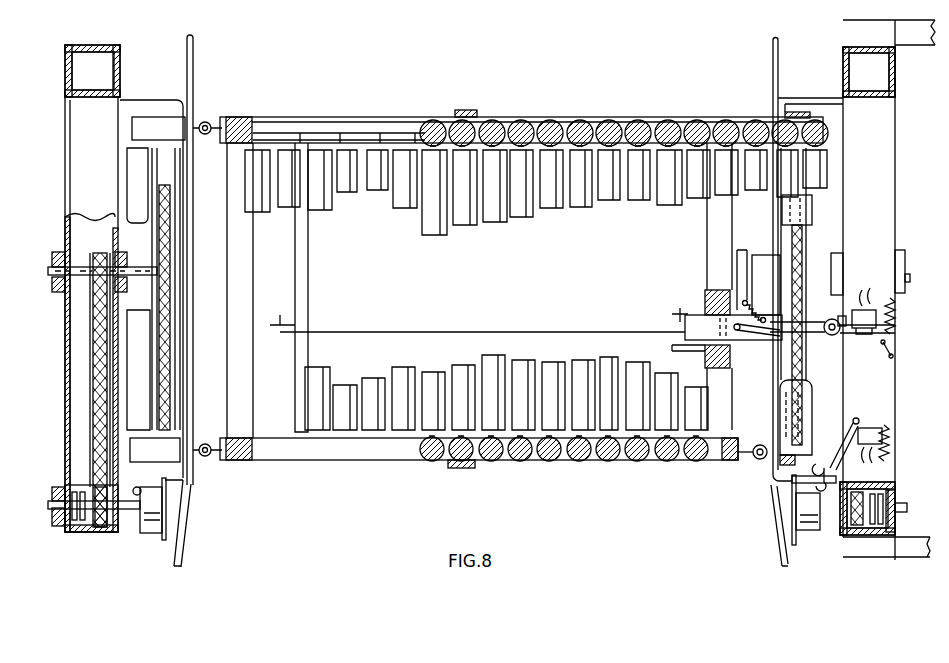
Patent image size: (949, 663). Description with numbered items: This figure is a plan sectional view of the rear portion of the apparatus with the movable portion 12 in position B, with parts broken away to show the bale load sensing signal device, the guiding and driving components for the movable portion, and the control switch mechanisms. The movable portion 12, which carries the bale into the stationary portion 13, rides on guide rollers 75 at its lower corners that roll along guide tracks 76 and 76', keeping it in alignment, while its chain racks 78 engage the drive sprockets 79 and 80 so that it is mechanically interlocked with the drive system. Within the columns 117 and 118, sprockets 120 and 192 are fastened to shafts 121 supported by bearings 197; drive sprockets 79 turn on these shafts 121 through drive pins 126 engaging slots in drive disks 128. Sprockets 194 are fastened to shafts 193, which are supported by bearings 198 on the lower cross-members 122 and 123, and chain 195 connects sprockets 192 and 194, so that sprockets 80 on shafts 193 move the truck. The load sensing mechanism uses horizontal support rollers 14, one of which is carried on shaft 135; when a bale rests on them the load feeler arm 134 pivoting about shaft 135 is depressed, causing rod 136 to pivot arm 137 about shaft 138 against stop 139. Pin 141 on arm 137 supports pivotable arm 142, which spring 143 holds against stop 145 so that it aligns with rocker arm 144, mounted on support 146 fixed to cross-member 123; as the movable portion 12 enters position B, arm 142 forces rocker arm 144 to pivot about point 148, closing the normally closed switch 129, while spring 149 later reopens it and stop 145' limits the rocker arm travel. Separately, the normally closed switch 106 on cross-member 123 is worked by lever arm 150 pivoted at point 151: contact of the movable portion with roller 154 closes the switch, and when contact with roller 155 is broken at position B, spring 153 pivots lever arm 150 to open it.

The movable portion 12 is at (380, 132).
The stationary portion 13 is at (905, 151).
The horizontal support rollers 14 is at (462, 230).
The guide rollers 75 is at (206, 121).
The guide track 76 is at (145, 260).
The guide track 76' is at (789, 260).
The chain racks 78 is at (170, 234).
The drive sprockets 79 is at (183, 527).
The drive sprockets 80 is at (160, 268).
The normally closed electrical switch 106 is at (882, 438).
The column 117 is at (65, 532).
The column 118 is at (845, 536).
The sprockets 120 is at (78, 522).
The shafts 121 is at (48, 505).
The lower cross-member 122 is at (64, 398).
The lower cross-member 123 is at (880, 405).
The drive pins 126 is at (137, 487).
The drive disks 128 is at (148, 533).
The normally closed switch 129 is at (877, 322).
The load feeler arm 134 is at (405, 132).
The shaft 135 is at (338, 131).
The rod 136 is at (412, 331).
The arm 137 is at (700, 318).
The shaft 138 is at (672, 312).
The stop 139 is at (702, 352).
The pin 141 is at (742, 334).
The pivotable arm 142 is at (737, 302).
The spring 143 is at (750, 301).
The rocker arm 144 is at (815, 334).
The stop 145 is at (757, 266).
The stop 145' is at (910, 356).
The support 146 is at (826, 322).
The pivot point 148 is at (839, 316).
The spring 149 is at (893, 318).
The lever arm 150 is at (850, 431).
The pivot point 151 is at (853, 417).
The spring 153 is at (889, 462).
The lever arm roller 154 is at (792, 483).
The lever arm roller 155 is at (818, 462).
The sprockets 192 is at (100, 527).
The shafts 193 is at (48, 271).
The sprockets 194 is at (98, 262).
The chain 195 is at (90, 350).
The bearings 197 is at (54, 487).
The bearings 198 is at (52, 260).